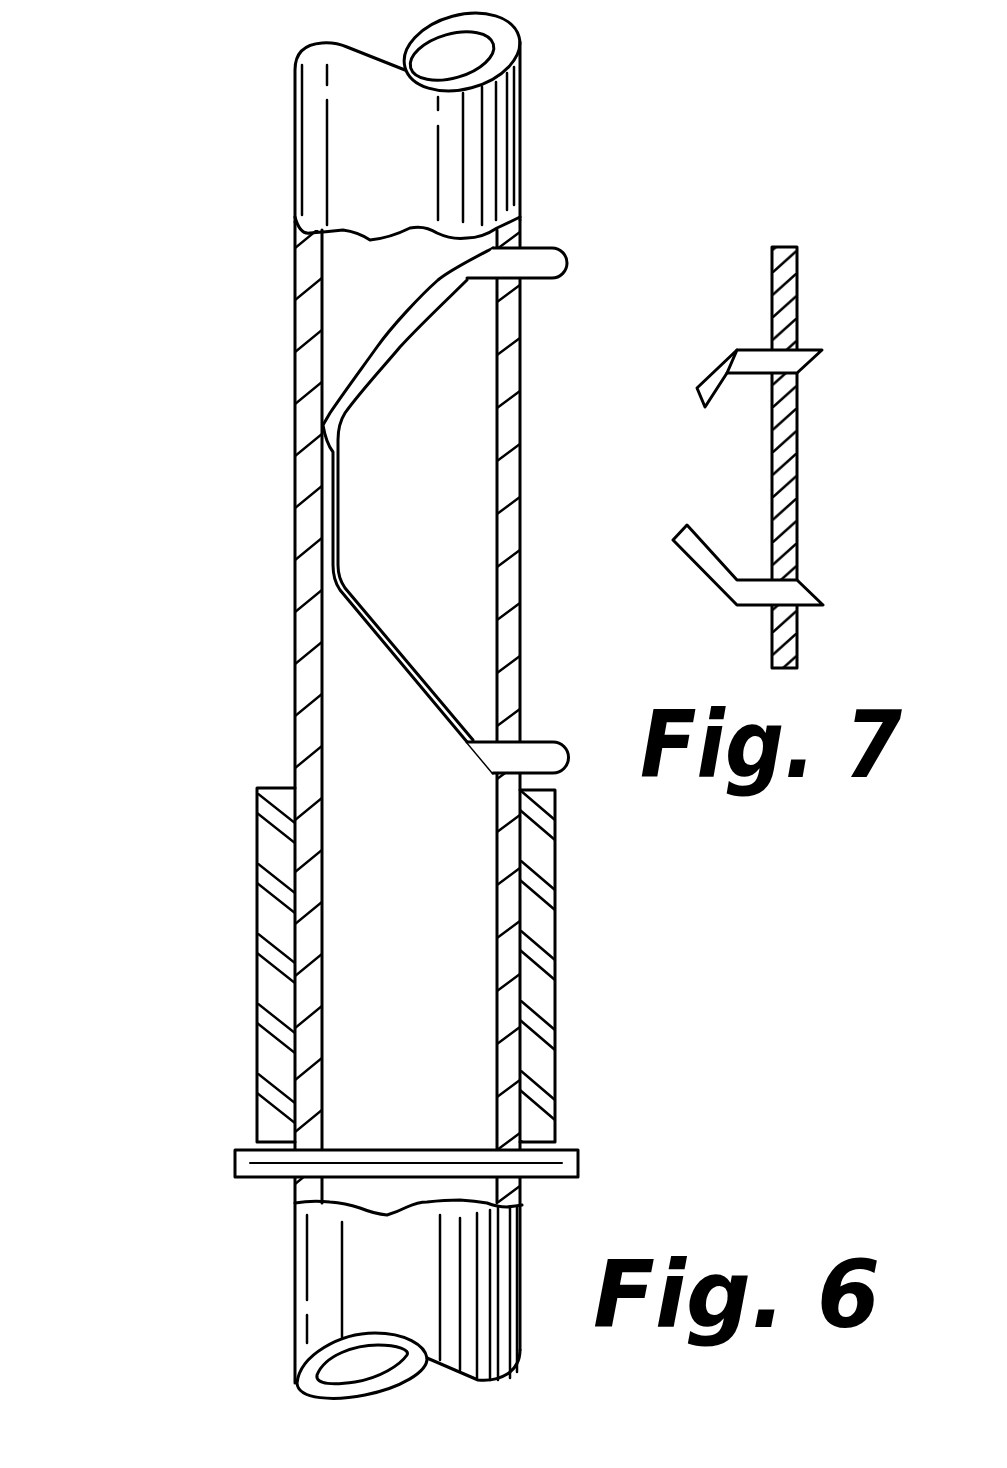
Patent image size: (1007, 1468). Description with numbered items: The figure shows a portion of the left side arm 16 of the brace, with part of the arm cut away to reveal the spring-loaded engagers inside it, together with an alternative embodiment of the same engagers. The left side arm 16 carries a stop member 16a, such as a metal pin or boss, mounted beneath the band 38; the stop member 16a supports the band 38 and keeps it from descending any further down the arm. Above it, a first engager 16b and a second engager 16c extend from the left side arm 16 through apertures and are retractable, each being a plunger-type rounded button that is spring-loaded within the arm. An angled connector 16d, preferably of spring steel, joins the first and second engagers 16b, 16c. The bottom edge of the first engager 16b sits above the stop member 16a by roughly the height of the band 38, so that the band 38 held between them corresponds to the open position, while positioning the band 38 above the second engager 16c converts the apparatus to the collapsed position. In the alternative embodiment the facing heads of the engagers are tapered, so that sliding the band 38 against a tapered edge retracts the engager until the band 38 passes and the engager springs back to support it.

In FIG. 6, the left side arm 16 is at (222, 433).
In FIG. 7, the left side arm 16 is at (757, 325).
In FIG. 6, the stop member 16a is at (253, 1178).
In FIG. 6, the first engager 16b is at (533, 753).
In FIG. 7, the first engager 16b is at (813, 588).
In FIG. 6, the second engager 16c is at (540, 257).
In FIG. 7, the second engager 16c is at (807, 347).
In FIG. 6, the angled connector 16d is at (328, 545).
In FIG. 7, the angled connector 16d is at (697, 387).
In FIG. 6, the band 38 is at (202, 900).